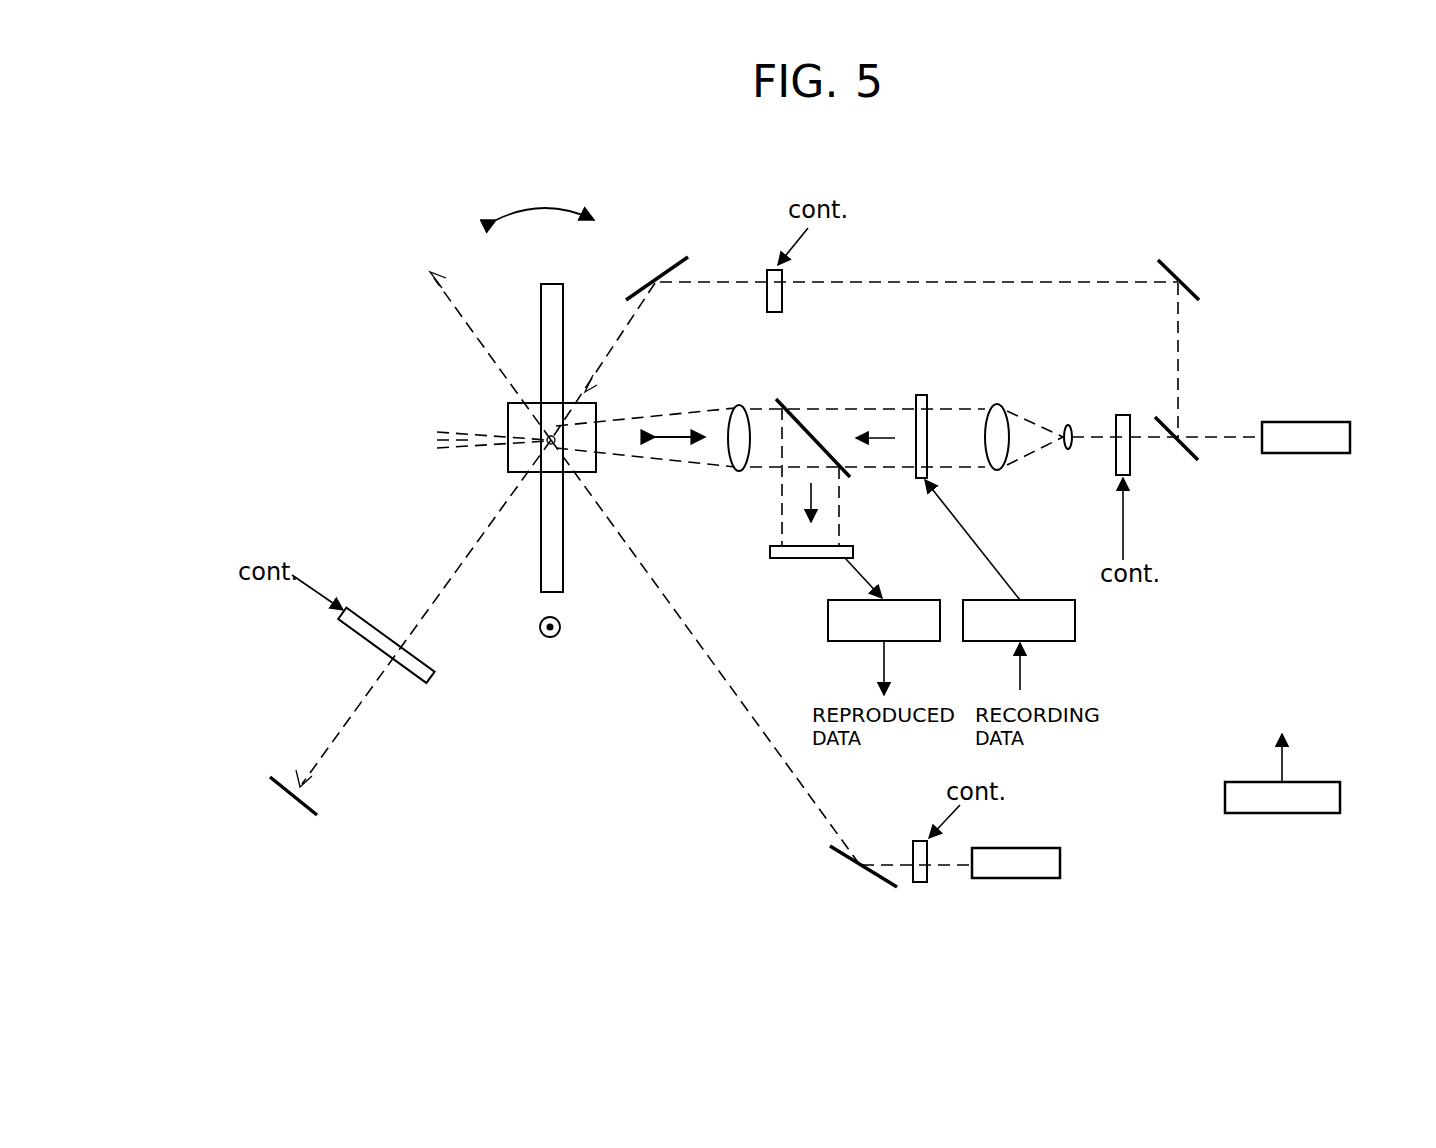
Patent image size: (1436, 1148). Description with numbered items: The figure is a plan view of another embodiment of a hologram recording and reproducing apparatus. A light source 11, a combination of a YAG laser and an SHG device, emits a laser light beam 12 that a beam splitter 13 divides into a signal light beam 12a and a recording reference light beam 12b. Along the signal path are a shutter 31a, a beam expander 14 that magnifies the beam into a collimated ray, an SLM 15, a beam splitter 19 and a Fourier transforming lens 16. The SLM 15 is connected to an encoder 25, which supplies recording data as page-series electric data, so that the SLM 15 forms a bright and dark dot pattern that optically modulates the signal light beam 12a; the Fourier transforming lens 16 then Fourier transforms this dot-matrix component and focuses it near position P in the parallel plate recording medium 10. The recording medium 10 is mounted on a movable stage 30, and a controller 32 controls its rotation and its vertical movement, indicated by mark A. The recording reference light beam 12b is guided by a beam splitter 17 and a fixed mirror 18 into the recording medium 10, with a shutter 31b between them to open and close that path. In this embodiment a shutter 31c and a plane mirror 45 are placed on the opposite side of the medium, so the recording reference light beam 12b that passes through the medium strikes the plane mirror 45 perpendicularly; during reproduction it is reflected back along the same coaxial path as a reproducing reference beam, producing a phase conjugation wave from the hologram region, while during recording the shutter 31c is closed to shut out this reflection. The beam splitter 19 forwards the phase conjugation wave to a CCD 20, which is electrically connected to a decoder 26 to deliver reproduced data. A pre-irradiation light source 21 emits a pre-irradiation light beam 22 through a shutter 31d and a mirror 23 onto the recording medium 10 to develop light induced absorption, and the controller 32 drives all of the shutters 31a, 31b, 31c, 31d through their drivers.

The recording medium 10 is at (552, 296).
The movable stage 30 is at (596, 465).
The vertical movement mark A is at (560, 627).
The fixed mirror 18 is at (660, 276).
The Fourier transforming lens 16 is at (740, 405).
The beam splitter 19 is at (815, 435).
The beam splitter 17 is at (1190, 282).
The SLM 15 is at (921, 394).
The CCD 20 is at (770, 552).
The decoder 26 is at (828, 620).
The encoder 25 is at (1046, 599).
The beam expander 14 is at (1033, 440).
The shutter 31a is at (1125, 413).
The beam splitter 13 is at (1185, 460).
The signal light beam 12a is at (1160, 440).
The laser light beam 12 is at (1233, 440).
The recording reference light beam 12b is at (1180, 355).
The light source 11 is at (1306, 453).
The shutter 31b is at (782, 300).
The shutter 31c is at (362, 628).
The plane mirror 45 is at (282, 792).
The mirror 23 is at (842, 856).
The shutter 31d is at (912, 855).
The pre-irradiation light source 21 is at (1060, 863).
The pre-irradiation light beam 22 is at (950, 866).
The controller 32 is at (1312, 813).